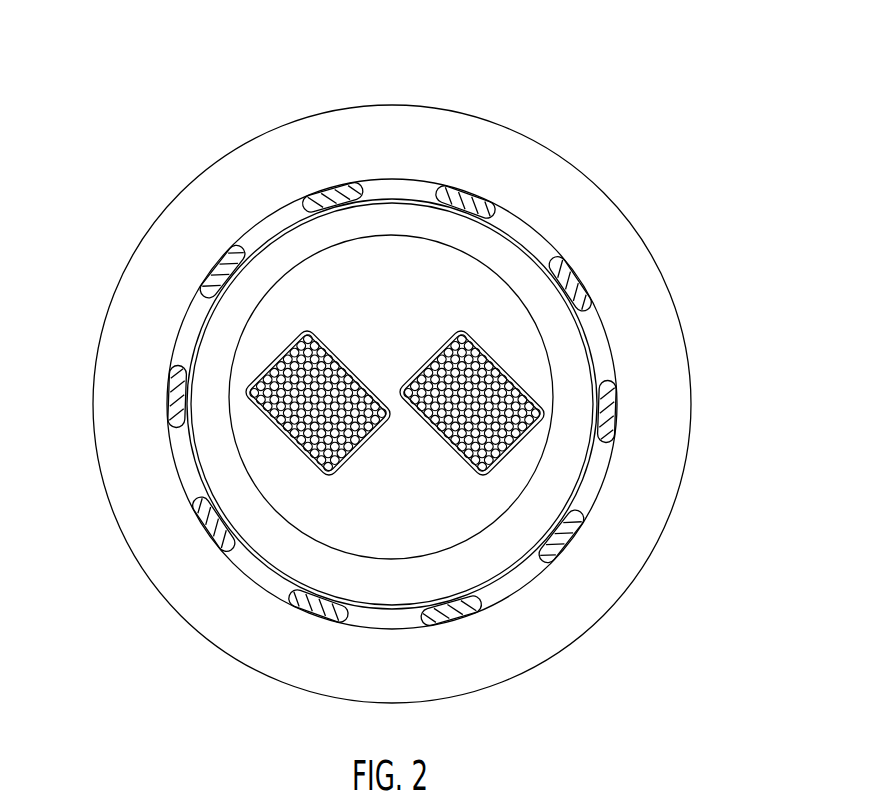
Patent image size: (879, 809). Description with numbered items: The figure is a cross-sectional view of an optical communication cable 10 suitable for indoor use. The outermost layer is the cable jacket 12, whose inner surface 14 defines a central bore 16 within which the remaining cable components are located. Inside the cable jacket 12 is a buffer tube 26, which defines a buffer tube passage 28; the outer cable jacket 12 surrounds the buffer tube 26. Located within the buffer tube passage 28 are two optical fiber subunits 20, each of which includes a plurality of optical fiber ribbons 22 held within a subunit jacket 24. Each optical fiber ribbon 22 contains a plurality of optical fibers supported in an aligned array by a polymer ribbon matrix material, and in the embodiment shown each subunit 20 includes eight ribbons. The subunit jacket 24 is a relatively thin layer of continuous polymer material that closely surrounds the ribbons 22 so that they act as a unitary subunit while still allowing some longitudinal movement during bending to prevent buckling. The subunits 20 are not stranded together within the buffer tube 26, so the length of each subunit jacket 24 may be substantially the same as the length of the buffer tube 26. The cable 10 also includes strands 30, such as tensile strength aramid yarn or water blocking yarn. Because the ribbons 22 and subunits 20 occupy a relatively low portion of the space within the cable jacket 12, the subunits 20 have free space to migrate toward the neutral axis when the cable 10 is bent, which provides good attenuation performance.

The cable 10 is at (397, 366).
The cable jacket 12 is at (584, 219).
The inner surface 14 is at (542, 589).
The central bore 16 is at (602, 482).
The optical fiber subunit 20 is at (423, 451).
The optical fiber ribbon 22 is at (303, 438).
The subunit jacket 24 is at (422, 363).
The buffer tube 26 is at (460, 228).
The buffer tube passage 28 is at (307, 278).
The strands 30 is at (176, 358).